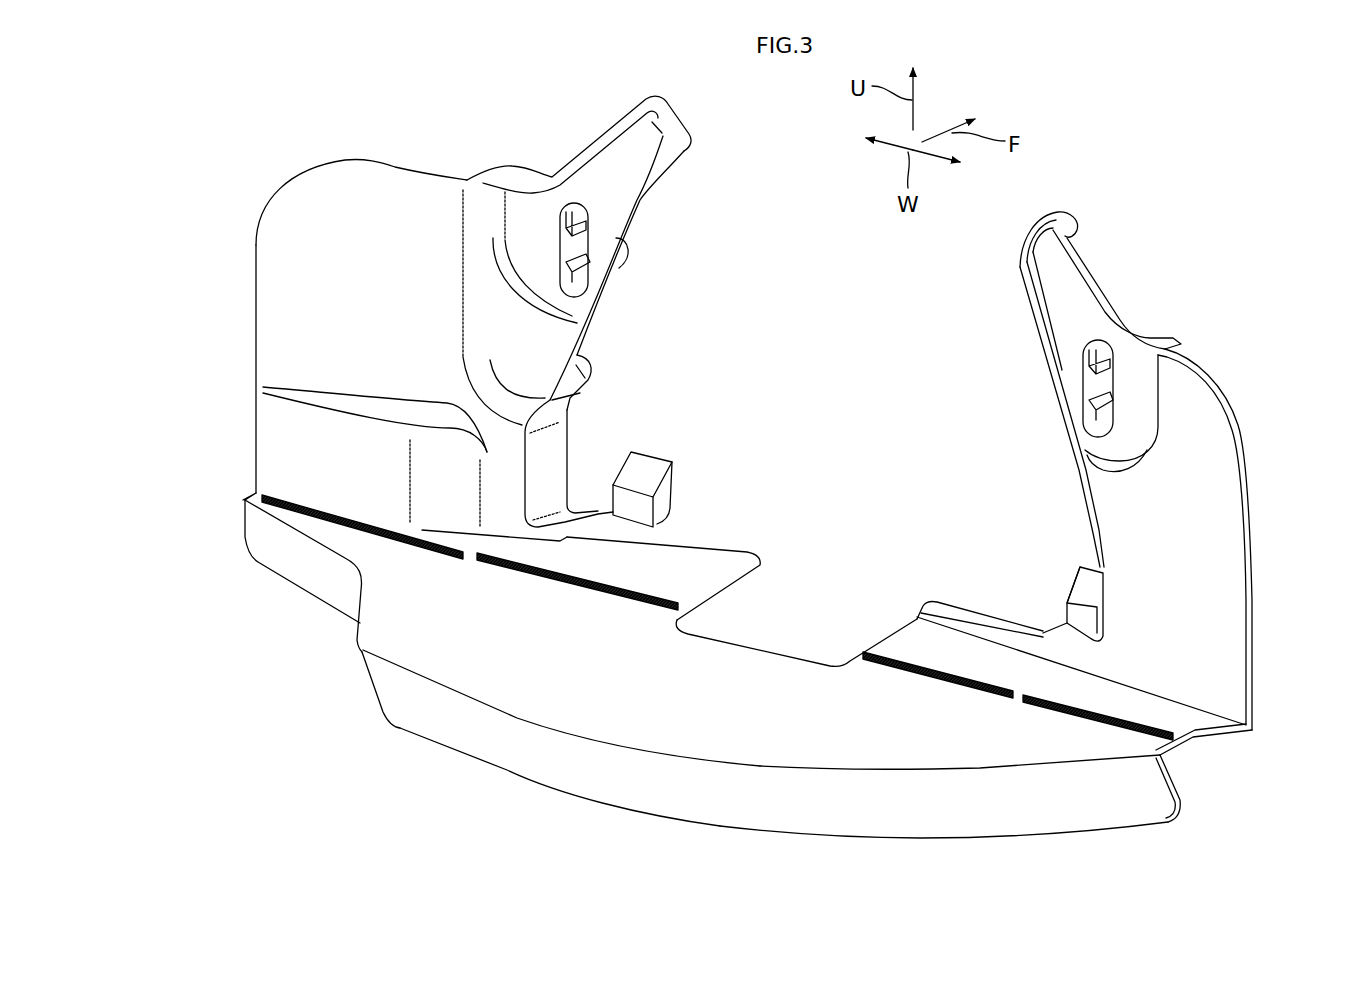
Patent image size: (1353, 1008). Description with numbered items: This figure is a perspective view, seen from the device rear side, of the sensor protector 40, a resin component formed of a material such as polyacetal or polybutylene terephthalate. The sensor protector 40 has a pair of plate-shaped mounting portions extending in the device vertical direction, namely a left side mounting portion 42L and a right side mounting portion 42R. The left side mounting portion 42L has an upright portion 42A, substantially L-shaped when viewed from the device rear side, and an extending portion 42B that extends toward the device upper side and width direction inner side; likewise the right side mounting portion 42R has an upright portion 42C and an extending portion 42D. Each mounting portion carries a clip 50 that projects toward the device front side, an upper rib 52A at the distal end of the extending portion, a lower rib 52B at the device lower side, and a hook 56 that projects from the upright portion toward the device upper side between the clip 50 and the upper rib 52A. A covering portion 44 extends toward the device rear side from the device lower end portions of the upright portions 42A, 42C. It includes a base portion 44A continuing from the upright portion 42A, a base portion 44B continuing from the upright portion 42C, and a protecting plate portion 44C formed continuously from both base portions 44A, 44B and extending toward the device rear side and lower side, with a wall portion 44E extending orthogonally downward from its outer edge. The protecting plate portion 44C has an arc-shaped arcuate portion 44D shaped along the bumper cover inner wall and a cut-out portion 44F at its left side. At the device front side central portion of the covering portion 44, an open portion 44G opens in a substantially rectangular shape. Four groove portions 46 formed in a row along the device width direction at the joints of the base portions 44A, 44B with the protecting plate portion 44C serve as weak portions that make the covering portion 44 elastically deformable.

The sensor protector 40 is at (397, 130).
The left side mounting portion 42L is at (296, 174).
The right side mounting portion 42R is at (1208, 355).
The upright portion 42A is at (285, 302).
The extending portion 42B is at (597, 204).
The upright portion 42C is at (1222, 552).
The extending portion 42D is at (1053, 287).
The covering portion 44 is at (364, 679).
The base portion 44A is at (715, 580).
The base portion 44B is at (917, 640).
The protecting plate portion 44C is at (626, 712).
The arcuate portion 44D is at (518, 722).
The wall portion 44E is at (917, 800).
The cut-out portion 44F is at (347, 560).
The open portion 44G is at (728, 600).
The groove portions 46 is at (502, 568).
The clip 50 is at (623, 253).
The upper rib 52A is at (672, 122).
The lower rib 52B is at (582, 380).
The hook 56 is at (647, 473).